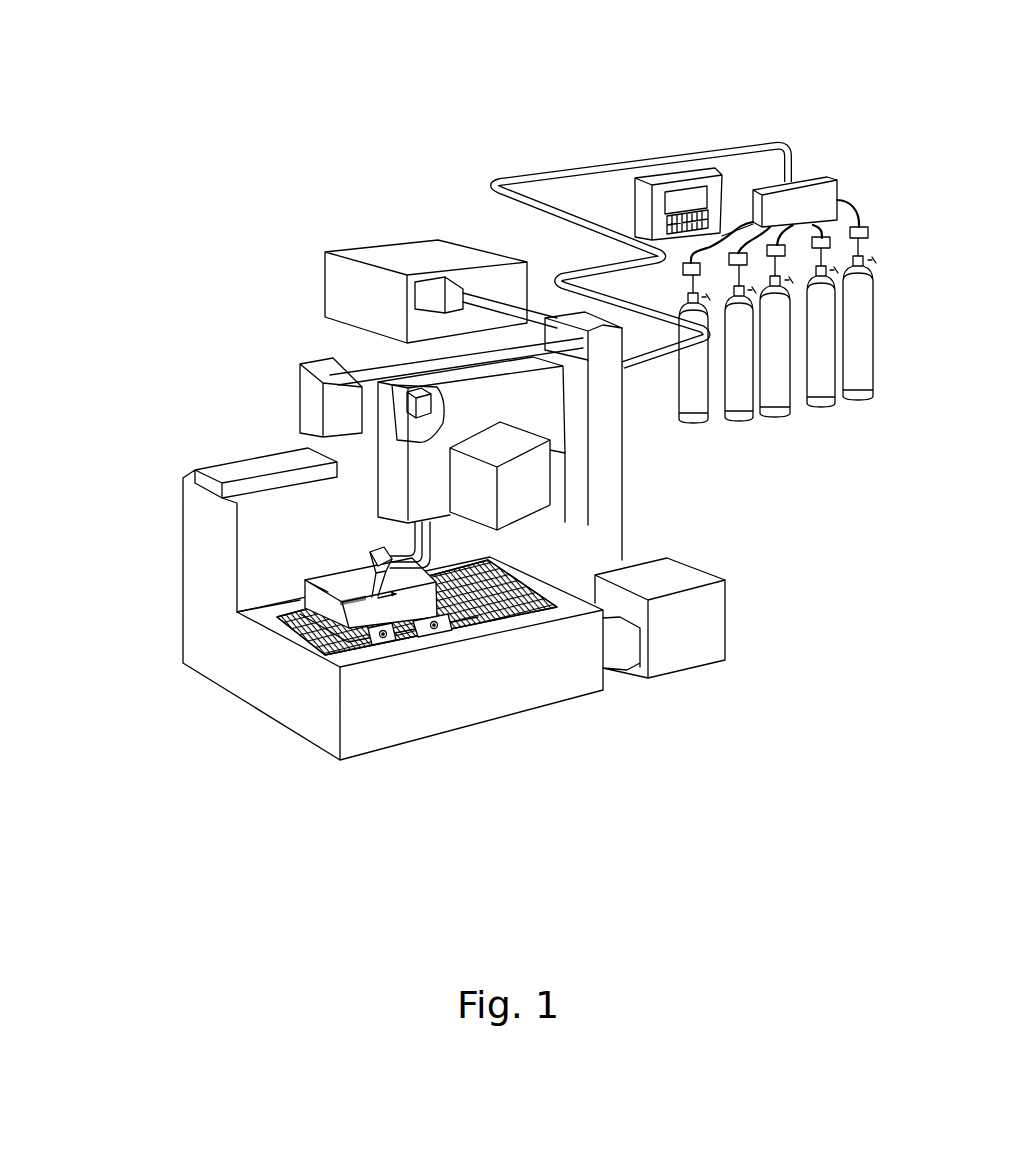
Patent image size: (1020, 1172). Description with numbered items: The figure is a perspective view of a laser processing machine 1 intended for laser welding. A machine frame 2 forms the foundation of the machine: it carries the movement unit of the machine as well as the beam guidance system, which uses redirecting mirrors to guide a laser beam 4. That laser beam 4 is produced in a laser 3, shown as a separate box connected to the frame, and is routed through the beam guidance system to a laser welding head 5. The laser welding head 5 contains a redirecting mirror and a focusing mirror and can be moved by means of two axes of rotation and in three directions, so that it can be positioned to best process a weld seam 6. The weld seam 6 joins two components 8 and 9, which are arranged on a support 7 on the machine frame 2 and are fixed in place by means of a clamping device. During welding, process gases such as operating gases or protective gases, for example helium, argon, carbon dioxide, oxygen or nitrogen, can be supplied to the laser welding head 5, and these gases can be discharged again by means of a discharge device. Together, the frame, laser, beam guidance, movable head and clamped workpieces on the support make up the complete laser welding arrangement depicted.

The laser processing machine 1 is at (409, 144).
The machine frame 2 is at (218, 545).
The laser 3 is at (417, 248).
The laser beam 4 is at (362, 367).
The laser welding head 5 is at (392, 635).
The weld seam 6 is at (332, 623).
The support 7 is at (503, 610).
The component 8 is at (290, 622).
The component 9 is at (350, 625).